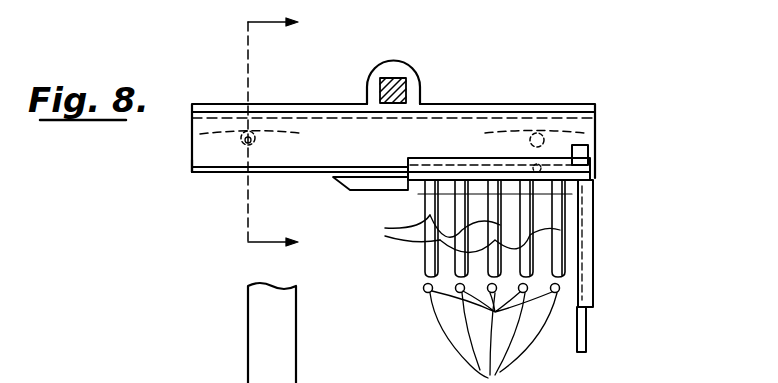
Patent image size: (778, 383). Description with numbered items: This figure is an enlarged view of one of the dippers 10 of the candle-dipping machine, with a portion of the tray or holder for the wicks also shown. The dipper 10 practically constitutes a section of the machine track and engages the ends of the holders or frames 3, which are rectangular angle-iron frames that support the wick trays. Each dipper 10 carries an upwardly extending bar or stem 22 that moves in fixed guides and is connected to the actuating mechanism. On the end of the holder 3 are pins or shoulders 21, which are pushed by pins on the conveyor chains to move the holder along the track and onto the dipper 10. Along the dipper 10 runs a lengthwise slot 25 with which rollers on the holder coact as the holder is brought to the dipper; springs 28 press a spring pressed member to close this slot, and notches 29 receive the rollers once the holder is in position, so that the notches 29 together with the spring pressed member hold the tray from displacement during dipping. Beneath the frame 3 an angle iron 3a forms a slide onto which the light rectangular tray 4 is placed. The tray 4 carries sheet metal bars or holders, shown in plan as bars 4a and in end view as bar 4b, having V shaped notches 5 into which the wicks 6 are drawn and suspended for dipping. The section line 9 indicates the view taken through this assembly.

The frame 3 is at (596, 222).
The angle iron 3a is at (355, 191).
The tray 4 is at (380, 197).
The sheet metal bar 4a is at (456, 233).
The end view of sheet metal bar 4b is at (492, 313).
The V shaped notches 5 is at (490, 220).
The wicks 6 is at (492, 334).
The section line 9 is at (284, 134).
The dipper 10 is at (541, 105).
The pins or shoulders 21 is at (589, 156).
The bar or stem 22 is at (404, 78).
The lengthwise slot 25 is at (190, 170).
The springs 28 is at (215, 140).
The notches 29 is at (244, 166).